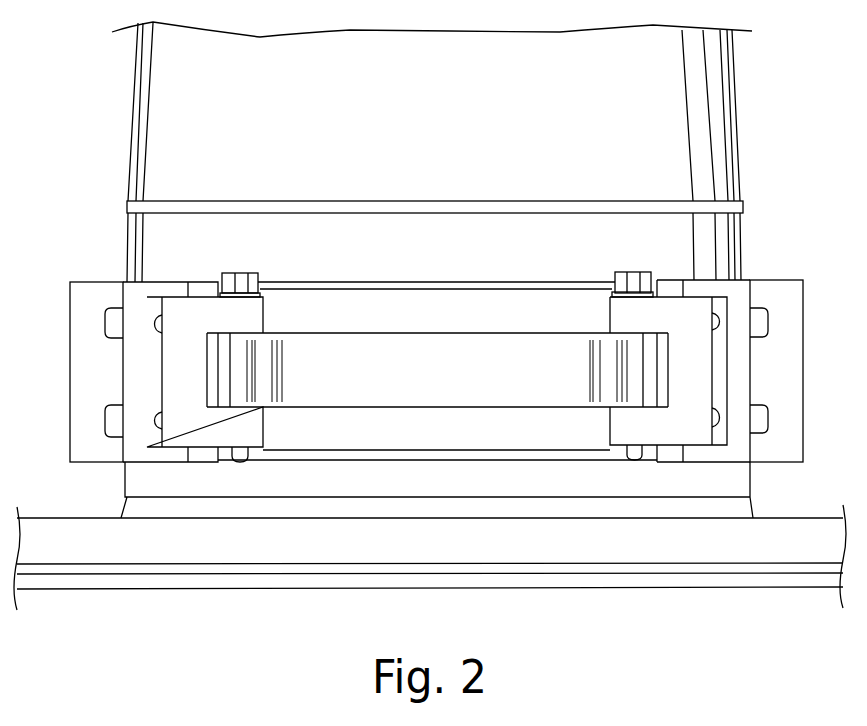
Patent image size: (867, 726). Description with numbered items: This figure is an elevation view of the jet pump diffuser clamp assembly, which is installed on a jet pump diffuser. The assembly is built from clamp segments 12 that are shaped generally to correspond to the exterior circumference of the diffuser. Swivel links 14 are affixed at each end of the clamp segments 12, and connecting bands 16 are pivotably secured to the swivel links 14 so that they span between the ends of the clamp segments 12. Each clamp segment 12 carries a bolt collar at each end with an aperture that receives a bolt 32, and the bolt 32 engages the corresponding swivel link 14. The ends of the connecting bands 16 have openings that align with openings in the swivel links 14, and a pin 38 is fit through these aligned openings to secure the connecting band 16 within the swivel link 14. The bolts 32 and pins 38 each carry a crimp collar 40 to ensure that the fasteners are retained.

The clamp segment 12 is at (788, 295).
The swivel link 14 is at (200, 323).
The connecting band 16 is at (332, 352).
The bolt 32 is at (163, 421).
The pin 38 is at (627, 452).
The crimp collar 40 is at (237, 282).